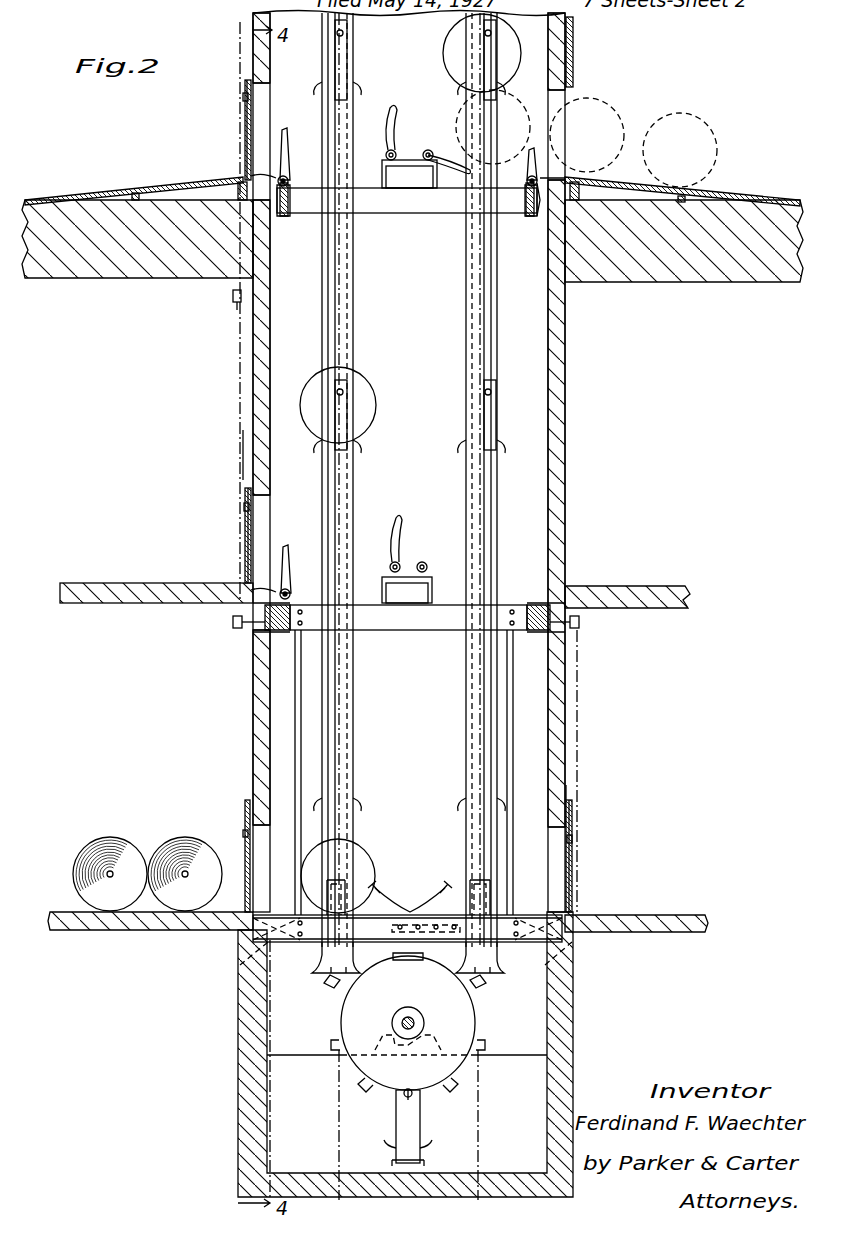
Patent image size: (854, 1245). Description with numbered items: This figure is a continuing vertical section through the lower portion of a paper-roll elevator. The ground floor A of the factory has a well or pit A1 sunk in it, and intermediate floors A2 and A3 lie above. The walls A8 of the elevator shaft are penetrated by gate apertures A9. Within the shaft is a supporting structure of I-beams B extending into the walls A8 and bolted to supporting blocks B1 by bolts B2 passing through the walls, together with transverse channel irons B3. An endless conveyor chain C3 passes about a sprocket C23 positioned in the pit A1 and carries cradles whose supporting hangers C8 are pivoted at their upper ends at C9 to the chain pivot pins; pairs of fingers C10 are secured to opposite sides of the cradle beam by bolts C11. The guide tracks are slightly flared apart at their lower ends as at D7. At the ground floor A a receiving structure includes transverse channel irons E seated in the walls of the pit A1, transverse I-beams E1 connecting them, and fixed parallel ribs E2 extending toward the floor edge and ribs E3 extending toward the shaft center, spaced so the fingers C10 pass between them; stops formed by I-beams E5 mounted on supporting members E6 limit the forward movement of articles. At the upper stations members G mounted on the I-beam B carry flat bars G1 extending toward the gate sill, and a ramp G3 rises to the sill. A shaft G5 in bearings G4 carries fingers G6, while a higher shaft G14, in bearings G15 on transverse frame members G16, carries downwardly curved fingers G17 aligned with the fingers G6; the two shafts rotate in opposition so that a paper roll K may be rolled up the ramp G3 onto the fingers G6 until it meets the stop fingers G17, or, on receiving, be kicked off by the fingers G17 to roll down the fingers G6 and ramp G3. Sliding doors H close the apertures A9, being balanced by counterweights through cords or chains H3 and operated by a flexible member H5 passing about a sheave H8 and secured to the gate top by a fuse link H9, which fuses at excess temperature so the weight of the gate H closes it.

The ground floor A is at (60, 912).
The pit A1 is at (573, 1042).
The intermediate floor A2 is at (112, 583).
The intermediate floor A3 is at (102, 270).
The elevator shaft walls A8 is at (253, 378).
The gate aperture A9 is at (258, 132).
The I-beam B is at (284, 216).
The supporting block B1 is at (553, 598).
The bolt B2 is at (560, 612).
The transverse channel iron B3 is at (420, 215).
The conveyor chain C3 is at (496, 316).
The supporting hanger C8 is at (348, 50).
The hanger pivot C9 is at (344, 33).
The fingers C10 is at (358, 84).
The bolt C11 is at (392, 1163).
The sprocket C23 is at (470, 1027).
The flared track end D7 is at (318, 962).
The transverse channel iron E is at (495, 945).
The transverse I-beam E1 is at (565, 904).
The fixed rib E2 is at (240, 940).
The fixed rib E3 is at (500, 918).
The stop I-beam E5 is at (385, 888).
The supporting member E6 is at (395, 900).
The member G is at (536, 216).
The flat bar G1 is at (272, 178).
The ramp G3 is at (170, 188).
The bearing G4 is at (287, 178).
The shaft G5 is at (290, 183).
The finger G6 is at (285, 138).
The shaft G14 is at (427, 153).
The bearing G15 is at (388, 154).
The transverse supporting frame member G16 is at (409, 383).
The finger G17 is at (396, 116).
The sliding door H is at (244, 90).
The cord or chain H3 is at (243, 470).
The flexible member H5 is at (240, 48).
The sheave H8 is at (233, 298).
The fuse link H9 is at (242, 97).
The paper roll K is at (443, 53).